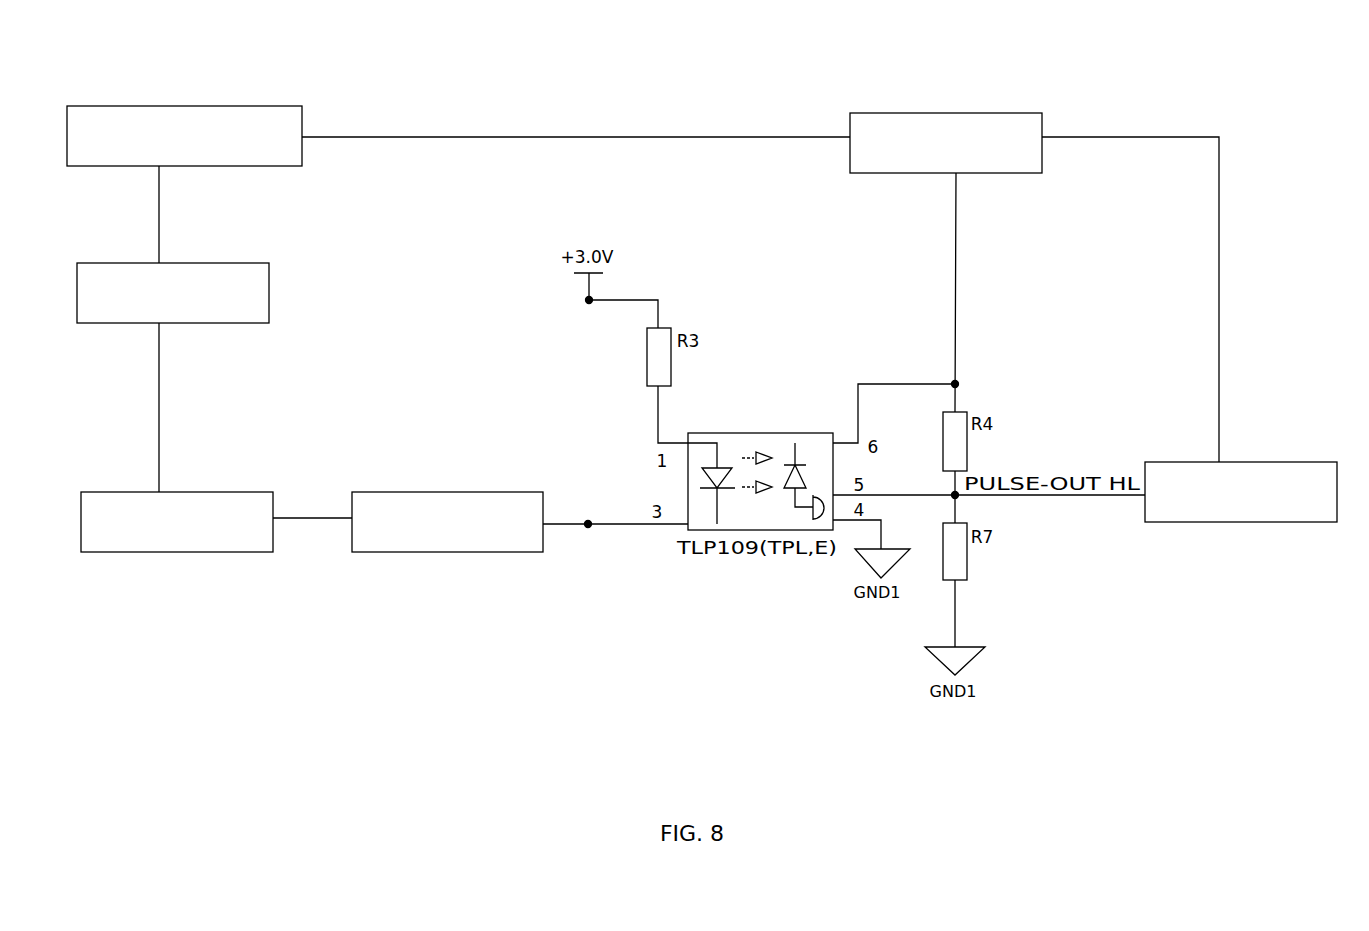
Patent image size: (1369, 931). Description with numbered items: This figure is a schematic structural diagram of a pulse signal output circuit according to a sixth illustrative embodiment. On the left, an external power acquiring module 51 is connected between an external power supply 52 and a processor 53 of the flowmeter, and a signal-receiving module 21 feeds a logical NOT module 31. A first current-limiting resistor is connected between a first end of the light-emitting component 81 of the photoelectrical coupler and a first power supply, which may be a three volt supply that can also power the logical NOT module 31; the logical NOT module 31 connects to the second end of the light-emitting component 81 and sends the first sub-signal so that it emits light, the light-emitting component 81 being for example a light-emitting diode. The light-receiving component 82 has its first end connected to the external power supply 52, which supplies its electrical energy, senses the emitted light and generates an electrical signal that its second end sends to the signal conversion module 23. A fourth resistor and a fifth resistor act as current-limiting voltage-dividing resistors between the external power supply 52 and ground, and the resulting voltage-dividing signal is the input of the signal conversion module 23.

The external power acquiring module 51 is at (183, 106).
The external power supply 52 is at (945, 113).
The processor 53 is at (168, 263).
The signal-receiving module 21 is at (166, 492).
The logical NOT module 31 is at (443, 492).
The signal conversion module 23 is at (1235, 462).
The light-emitting component 81 is at (722, 470).
The light-receiving component 82 is at (797, 468).